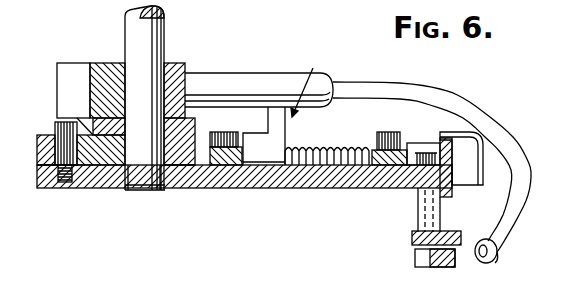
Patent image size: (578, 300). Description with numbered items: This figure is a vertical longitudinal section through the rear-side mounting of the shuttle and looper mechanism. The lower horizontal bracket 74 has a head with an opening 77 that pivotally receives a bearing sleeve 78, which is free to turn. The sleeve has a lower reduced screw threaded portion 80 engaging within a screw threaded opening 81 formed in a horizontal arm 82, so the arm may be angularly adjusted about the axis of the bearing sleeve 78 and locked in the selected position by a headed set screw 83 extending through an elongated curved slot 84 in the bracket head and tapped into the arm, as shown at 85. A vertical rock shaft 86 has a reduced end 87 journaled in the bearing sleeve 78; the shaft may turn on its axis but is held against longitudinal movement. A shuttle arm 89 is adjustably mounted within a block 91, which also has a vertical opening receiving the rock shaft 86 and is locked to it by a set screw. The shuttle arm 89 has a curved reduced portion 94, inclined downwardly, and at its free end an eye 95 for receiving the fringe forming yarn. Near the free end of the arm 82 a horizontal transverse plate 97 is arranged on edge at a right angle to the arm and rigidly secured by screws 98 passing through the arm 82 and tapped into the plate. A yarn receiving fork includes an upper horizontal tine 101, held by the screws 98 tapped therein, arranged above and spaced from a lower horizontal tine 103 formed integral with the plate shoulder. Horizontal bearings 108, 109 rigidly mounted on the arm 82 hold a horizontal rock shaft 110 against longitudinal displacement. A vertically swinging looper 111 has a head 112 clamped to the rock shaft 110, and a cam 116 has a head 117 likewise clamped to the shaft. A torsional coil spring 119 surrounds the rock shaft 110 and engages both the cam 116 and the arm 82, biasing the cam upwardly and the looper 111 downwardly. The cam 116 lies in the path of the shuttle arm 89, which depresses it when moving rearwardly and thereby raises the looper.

The lower horizontal bracket 74 is at (60, 154).
The opening 77 is at (110, 176).
The bearing sleeve 78 is at (171, 150).
The lower reduced screw threaded portion 80 is at (127, 192).
The screw threaded opening 81 is at (172, 183).
The horizontal arm 82 is at (302, 183).
The headed set screw 83 is at (52, 157).
The elongated curved slot 84 is at (55, 143).
The tapped engagement 85 is at (61, 186).
The vertical rock shaft 86 is at (163, 46).
The reduced end 87 is at (142, 176).
The shuttle arm 89 is at (264, 82).
The block 91 is at (185, 70).
The curved reduced portion 94 is at (498, 118).
The eye 95 is at (495, 259).
The horizontal transverse plate 97 is at (418, 221).
The screws 98 is at (432, 180).
The upper horizontal tine 101 is at (412, 239).
The lower horizontal tine 103 is at (441, 263).
The horizontal bearing 108 is at (231, 150).
The horizontal bearing 109 is at (378, 152).
The horizontal rock shaft 110 is at (321, 148).
The vertically swinging looper 111 is at (452, 191).
The head 112 is at (483, 158).
The cam 116 is at (314, 80).
The head 117 is at (256, 133).
The torsional coil spring 119 is at (344, 144).